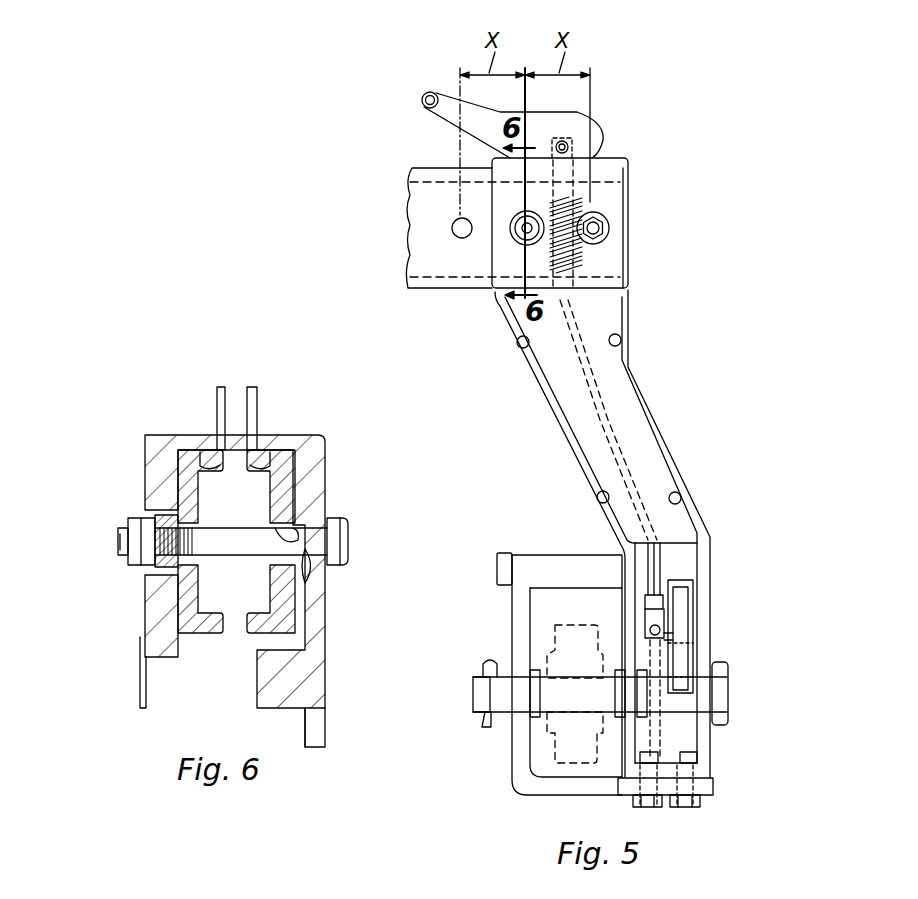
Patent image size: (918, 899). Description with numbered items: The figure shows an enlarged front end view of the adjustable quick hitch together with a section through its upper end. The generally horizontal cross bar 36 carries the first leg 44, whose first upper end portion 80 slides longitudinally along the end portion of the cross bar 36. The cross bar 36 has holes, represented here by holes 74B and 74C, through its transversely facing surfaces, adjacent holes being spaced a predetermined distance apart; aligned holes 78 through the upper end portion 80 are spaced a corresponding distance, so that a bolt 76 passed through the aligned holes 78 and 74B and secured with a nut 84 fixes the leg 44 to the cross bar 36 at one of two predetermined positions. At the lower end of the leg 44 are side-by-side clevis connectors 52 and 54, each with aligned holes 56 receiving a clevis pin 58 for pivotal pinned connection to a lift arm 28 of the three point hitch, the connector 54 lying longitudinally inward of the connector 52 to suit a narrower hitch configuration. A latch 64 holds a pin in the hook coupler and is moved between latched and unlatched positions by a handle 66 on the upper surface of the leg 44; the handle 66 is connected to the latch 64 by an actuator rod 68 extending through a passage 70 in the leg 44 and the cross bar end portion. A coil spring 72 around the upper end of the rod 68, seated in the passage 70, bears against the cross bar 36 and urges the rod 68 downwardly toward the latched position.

In FIG. 5, the left lift arm 28 is at (567, 624).
In FIG. 6, the cross bar 36 is at (283, 437).
In FIG. 5, the first leg 44 is at (684, 466).
In FIG. 6, the first leg 44 is at (335, 732).
In FIG. 5, the connector 52 is at (714, 777).
In FIG. 5, the connector 54 is at (515, 778).
In FIG. 5, the aligned holes 56 is at (710, 703).
In FIG. 5, the clevis pin 58 is at (728, 664).
In FIG. 5, the latch 64 is at (688, 612).
In FIG. 5, the handle 66 is at (448, 95).
In FIG. 5, the actuator rod 68 is at (608, 413).
In FIG. 5, the passage 70 is at (662, 563).
In FIG. 6, the passage 70 is at (237, 463).
In FIG. 5, the coil spring 72 is at (560, 200).
In FIG. 6, the hole 74B is at (120, 543).
In FIG. 5, the hole 74C is at (451, 227).
In FIG. 5, the bolt 76 is at (516, 233).
In FIG. 6, the bolt 76 is at (350, 533).
In FIG. 6, the aligned holes 78 is at (153, 515).
In FIG. 5, the first upper end portion 80 is at (630, 281).
In FIG. 6, the first upper end portion 80 is at (323, 662).
In FIG. 5, the nut 84 is at (515, 242).
In FIG. 6, the nut 84 is at (122, 566).